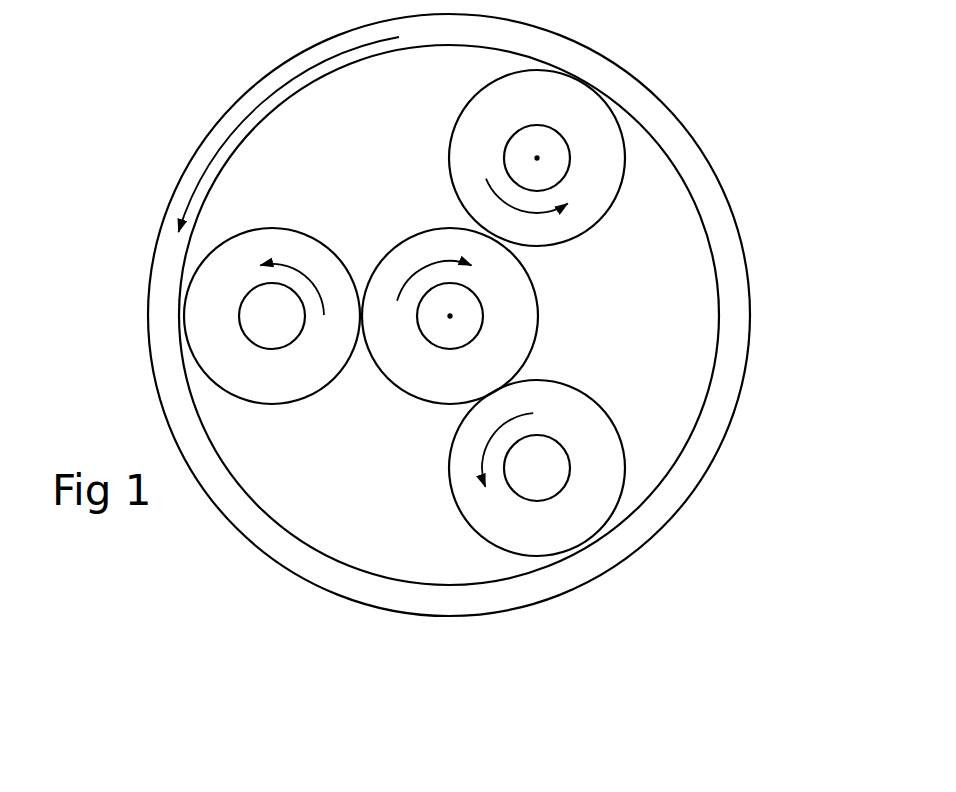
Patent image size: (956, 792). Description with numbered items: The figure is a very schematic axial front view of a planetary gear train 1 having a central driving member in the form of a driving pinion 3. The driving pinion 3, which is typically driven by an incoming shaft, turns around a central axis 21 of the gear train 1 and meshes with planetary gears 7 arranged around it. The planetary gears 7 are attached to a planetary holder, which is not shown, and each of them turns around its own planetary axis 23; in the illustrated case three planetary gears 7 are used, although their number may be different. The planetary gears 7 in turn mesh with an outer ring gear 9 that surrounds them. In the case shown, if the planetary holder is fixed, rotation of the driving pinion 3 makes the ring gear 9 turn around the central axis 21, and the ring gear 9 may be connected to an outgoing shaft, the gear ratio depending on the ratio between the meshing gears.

The planetary gear train 1 is at (444, 346).
The driving pinion 3 is at (427, 372).
The planetary gears 7 is at (593, 208).
The outer ring gear 9 is at (257, 533).
The central axis 21 is at (450, 316).
The planetary axis 23 is at (537, 158).